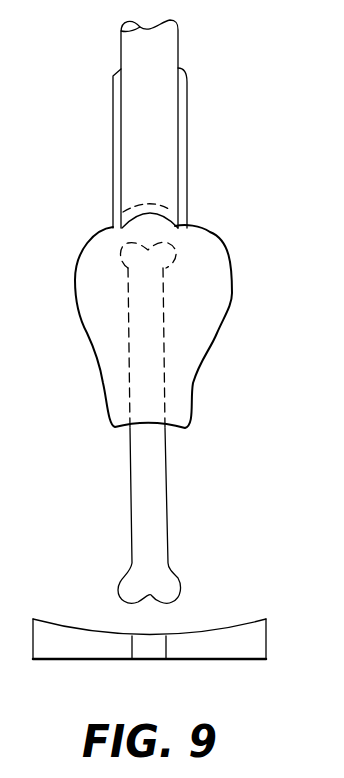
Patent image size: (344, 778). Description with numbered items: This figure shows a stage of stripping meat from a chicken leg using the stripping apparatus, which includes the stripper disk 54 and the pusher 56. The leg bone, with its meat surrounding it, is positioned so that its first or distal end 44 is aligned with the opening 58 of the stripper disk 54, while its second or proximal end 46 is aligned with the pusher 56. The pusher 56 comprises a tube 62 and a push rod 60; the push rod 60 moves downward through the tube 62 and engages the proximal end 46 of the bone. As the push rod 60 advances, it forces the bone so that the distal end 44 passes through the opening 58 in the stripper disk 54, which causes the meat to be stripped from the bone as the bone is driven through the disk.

The first distal end 44 is at (160, 586).
The second proximal end 46 is at (160, 258).
The stripper disk 54 is at (212, 657).
The pusher 56 is at (192, 137).
The opening 58 is at (162, 647).
The push rod 60 is at (155, 53).
The tube 62 is at (182, 182).